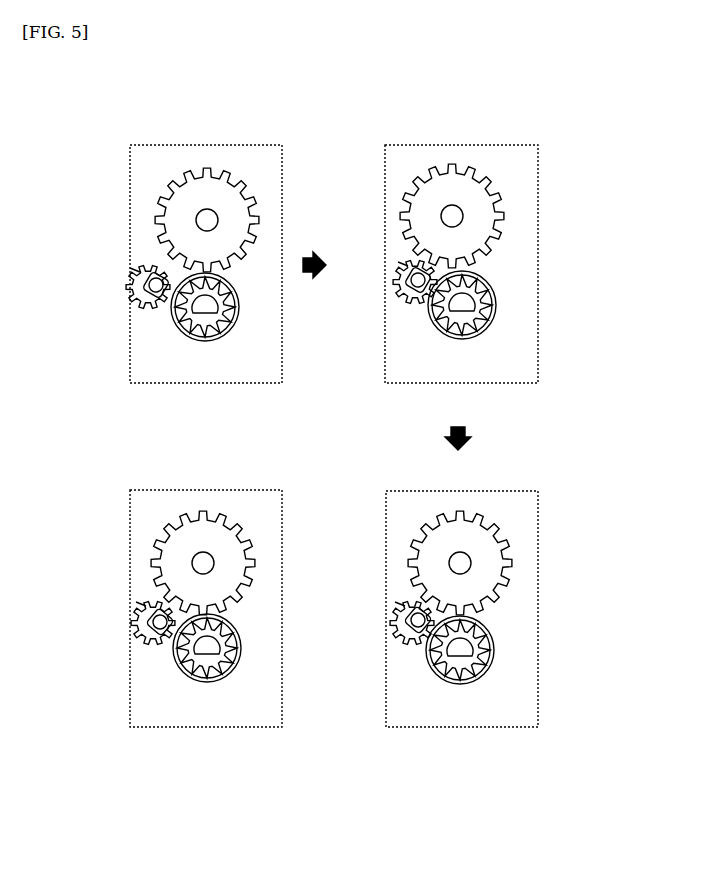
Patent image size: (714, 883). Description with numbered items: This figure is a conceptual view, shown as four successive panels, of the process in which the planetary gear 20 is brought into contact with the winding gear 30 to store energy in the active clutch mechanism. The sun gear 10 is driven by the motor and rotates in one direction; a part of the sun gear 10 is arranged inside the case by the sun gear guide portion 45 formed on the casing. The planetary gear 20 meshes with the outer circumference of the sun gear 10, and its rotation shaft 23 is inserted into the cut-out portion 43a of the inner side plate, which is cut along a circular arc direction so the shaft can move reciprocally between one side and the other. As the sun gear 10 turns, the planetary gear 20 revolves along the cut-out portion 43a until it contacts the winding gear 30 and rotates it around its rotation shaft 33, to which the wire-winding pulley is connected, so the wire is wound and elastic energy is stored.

The sun gear 10 is at (333, 520).
The sun gear guide portion 45 is at (359, 531).
The planetary gear 20 is at (138, 311).
The rotation shaft of the planetary gear 23 is at (148, 285).
The cut-out portion 43a is at (137, 270).
The winding gear 30 is at (233, 186).
The rotation shaft of the winding gear 33 is at (205, 212).